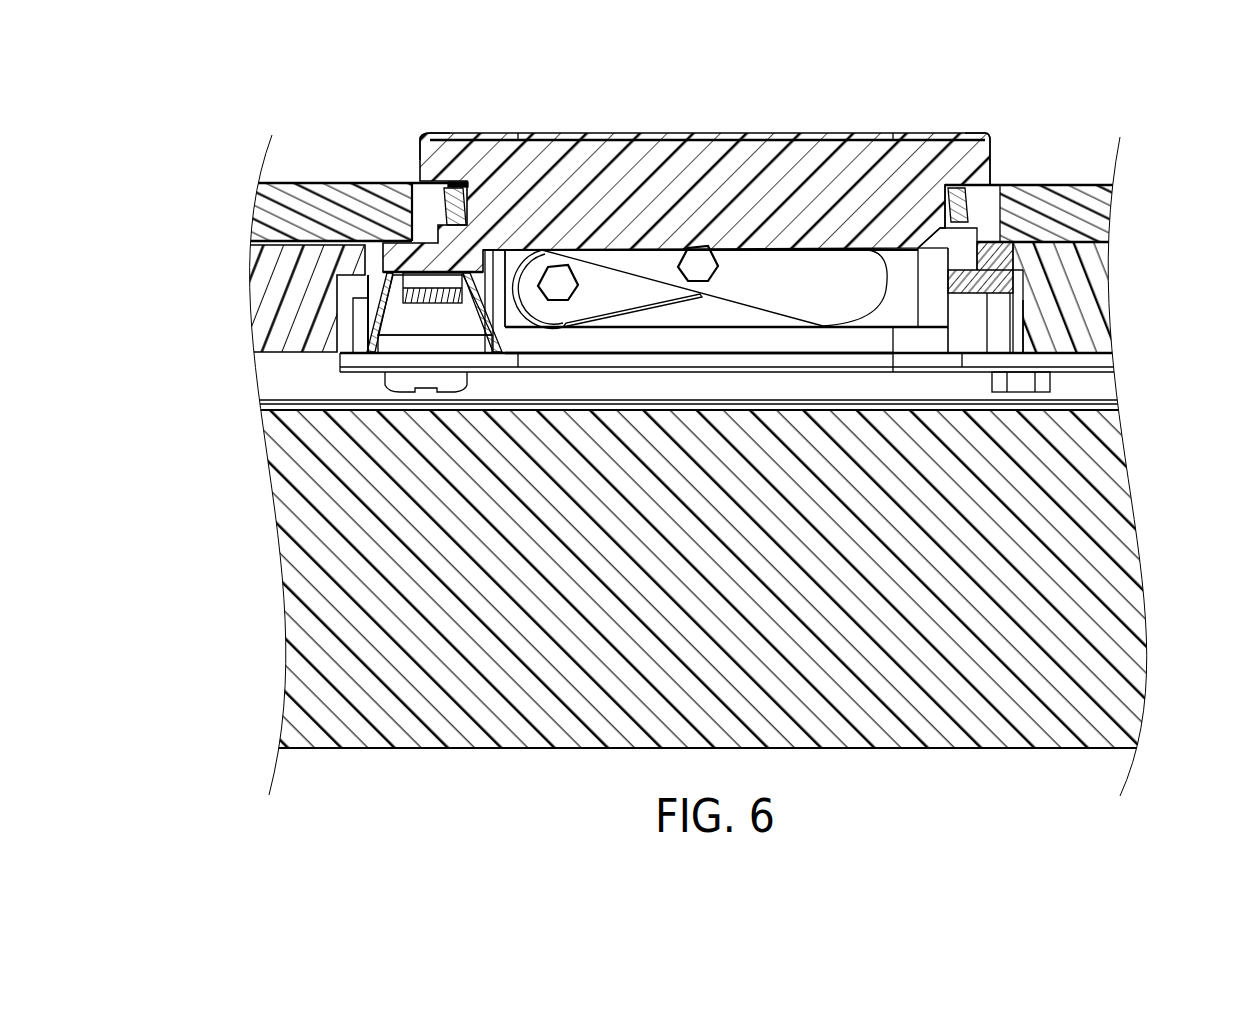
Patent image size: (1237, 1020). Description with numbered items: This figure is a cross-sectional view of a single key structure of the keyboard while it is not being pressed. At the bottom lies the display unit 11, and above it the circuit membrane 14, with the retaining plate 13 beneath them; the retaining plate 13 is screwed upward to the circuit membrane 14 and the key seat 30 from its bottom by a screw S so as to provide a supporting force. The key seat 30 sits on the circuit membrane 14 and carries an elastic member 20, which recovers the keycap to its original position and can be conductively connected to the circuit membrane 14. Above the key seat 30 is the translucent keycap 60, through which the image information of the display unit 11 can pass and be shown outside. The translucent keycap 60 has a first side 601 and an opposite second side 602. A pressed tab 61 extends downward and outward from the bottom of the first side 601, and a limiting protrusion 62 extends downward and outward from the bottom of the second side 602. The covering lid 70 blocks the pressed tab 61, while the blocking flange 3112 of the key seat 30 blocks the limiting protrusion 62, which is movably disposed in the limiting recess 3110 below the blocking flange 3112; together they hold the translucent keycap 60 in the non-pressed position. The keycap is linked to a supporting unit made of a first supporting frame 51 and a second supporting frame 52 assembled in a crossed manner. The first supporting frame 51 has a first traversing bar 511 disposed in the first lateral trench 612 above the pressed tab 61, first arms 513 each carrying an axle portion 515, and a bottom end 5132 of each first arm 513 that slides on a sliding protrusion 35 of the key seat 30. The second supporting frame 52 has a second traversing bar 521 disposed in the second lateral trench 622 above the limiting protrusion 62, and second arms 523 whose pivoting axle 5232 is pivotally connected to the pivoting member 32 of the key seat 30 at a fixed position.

The display unit 11 is at (1128, 540).
The retaining plate 13 is at (1098, 370).
The circuit membrane 14 is at (1095, 359).
The elastic member 20 is at (353, 287).
The key seat 30 is at (1064, 281).
The limiting recess 3110 is at (1025, 332).
The blocking flange 3112 is at (1002, 251).
The pivoting member 32 is at (735, 317).
The sliding protrusion 35 is at (865, 342).
The first supporting frame 51 is at (711, 181).
The first arm 513 is at (803, 260).
The bottom end of the first arm 5132 is at (857, 267).
The axle portion 515 is at (702, 257).
The second supporting frame 52 is at (612, 201).
The second arm 523 is at (618, 293).
The pivoting axle 5232 is at (560, 276).
The second traversing bar 521 is at (925, 185).
The first traversing bar 511 is at (474, 134).
The translucent keycap 60 is at (708, 165).
The first side 601 is at (425, 148).
The second side 602 is at (988, 150).
The pressed tab 61 is at (397, 253).
The first lateral trench 612 is at (434, 207).
The limiting protrusion 62 is at (1002, 283).
The second lateral trench 622 is at (985, 207).
The covering lid 70 is at (1097, 213).
The screw S is at (387, 382).